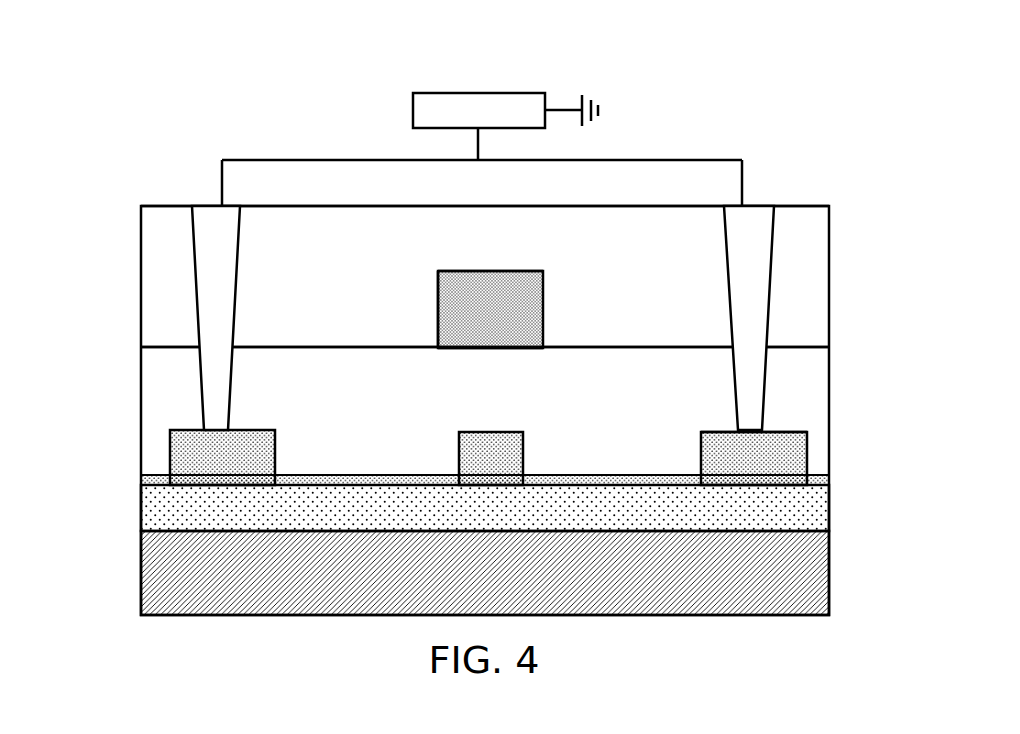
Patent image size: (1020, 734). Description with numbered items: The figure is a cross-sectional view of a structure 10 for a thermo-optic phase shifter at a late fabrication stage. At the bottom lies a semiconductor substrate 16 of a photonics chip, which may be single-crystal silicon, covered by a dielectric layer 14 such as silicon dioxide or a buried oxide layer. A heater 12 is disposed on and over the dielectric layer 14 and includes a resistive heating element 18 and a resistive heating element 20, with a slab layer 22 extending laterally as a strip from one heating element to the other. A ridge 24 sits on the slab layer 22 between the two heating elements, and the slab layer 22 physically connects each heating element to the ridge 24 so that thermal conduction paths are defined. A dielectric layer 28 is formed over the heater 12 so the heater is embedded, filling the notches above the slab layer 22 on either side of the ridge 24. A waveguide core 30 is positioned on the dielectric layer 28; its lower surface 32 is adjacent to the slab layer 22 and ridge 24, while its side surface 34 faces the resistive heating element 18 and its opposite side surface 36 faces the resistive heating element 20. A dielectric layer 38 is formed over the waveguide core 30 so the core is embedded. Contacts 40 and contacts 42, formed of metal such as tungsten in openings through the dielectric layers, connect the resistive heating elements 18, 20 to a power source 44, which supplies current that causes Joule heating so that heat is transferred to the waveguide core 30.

The structure 10 is at (150, 168).
The heater 12 is at (790, 418).
The dielectric layer 14 is at (193, 516).
The semiconductor substrate 16 is at (773, 552).
The resistive heating element 18 is at (205, 465).
The resistive heating element 20 is at (757, 468).
The slab layer 22 is at (585, 483).
The ridge 24 is at (482, 460).
The dielectric layer 28 is at (173, 365).
The waveguide core 30 is at (508, 320).
The lower surface 32 is at (470, 348).
The side surface 34 is at (438, 300).
The side surface 36 is at (543, 283).
The dielectric layer 38 is at (172, 244).
The contacts 40 is at (213, 294).
The contacts 42 is at (751, 252).
The power source 44 is at (470, 108).